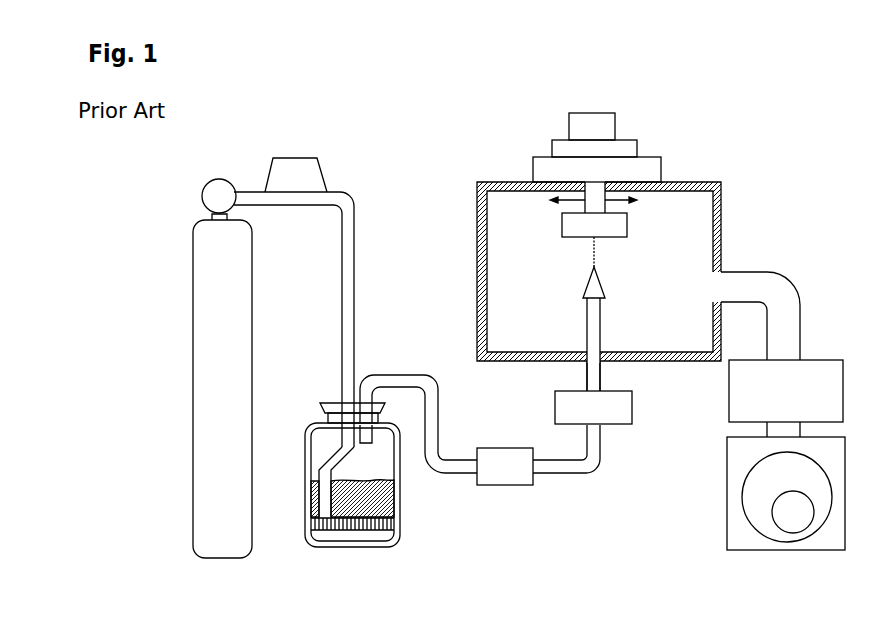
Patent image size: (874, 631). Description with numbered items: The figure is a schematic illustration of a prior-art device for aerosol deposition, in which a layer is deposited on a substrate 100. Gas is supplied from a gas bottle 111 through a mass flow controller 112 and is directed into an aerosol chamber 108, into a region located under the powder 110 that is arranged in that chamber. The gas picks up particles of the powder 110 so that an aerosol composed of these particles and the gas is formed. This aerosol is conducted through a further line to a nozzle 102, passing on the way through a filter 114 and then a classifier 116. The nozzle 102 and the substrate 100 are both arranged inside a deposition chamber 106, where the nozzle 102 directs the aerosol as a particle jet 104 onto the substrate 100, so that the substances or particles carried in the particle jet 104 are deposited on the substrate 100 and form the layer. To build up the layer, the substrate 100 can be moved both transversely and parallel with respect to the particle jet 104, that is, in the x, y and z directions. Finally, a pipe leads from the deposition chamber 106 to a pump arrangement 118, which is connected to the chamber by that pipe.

The substrate 100 is at (620, 225).
The nozzle 102 is at (585, 285).
The particle jet 104 is at (592, 248).
The deposition chamber 106 is at (721, 230).
The aerosol chamber 108 is at (367, 547).
The powder 110 is at (383, 497).
The gas bottle 111 is at (200, 350).
The mass flow controller 112 is at (294, 167).
The filter 114 is at (505, 485).
The classifier 116 is at (632, 408).
The pump arrangement 118 is at (822, 325).